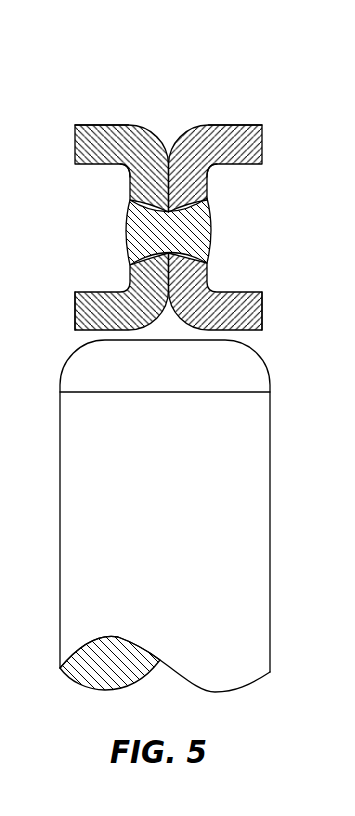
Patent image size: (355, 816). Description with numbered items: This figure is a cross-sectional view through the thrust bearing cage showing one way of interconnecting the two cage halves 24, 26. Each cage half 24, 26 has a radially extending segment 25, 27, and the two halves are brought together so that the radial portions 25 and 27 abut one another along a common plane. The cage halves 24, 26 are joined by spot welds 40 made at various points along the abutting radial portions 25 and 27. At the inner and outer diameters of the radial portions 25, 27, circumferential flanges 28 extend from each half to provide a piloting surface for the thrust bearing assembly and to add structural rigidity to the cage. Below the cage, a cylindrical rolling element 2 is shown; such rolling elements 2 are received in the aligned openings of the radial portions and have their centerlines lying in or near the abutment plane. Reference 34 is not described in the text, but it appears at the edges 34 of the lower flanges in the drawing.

The rolling element 2 is at (247, 537).
The cage half 24 is at (207, 128).
The radially extending segment 25 is at (203, 170).
The cage half 26 is at (132, 128).
The radially extending segment 27 is at (140, 168).
The circumferential flange 28 is at (77, 127).
The lower flange edges 34 is at (75, 312).
The spot weld 40 is at (143, 238).